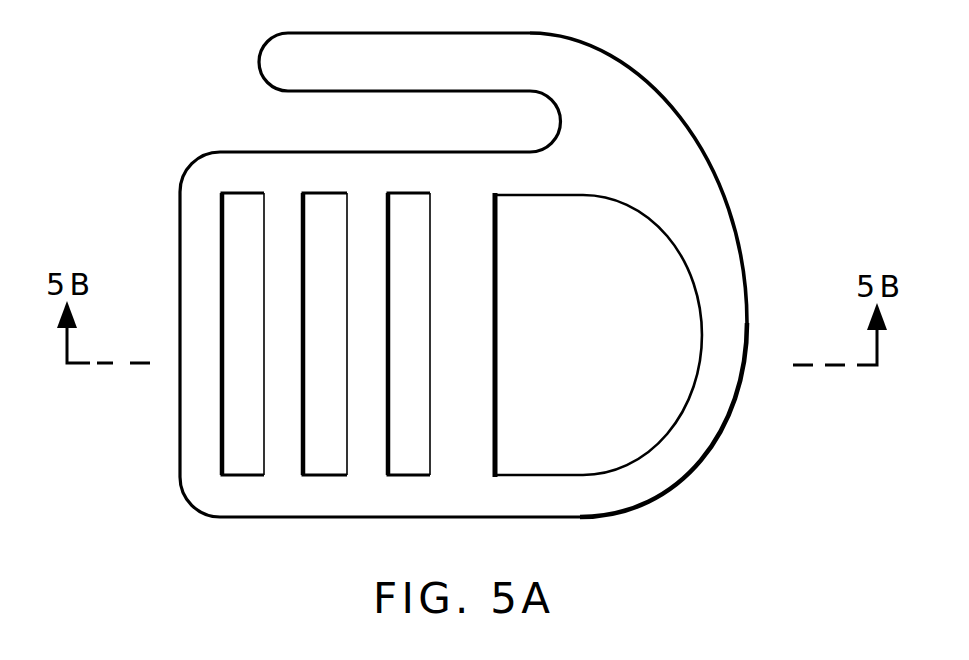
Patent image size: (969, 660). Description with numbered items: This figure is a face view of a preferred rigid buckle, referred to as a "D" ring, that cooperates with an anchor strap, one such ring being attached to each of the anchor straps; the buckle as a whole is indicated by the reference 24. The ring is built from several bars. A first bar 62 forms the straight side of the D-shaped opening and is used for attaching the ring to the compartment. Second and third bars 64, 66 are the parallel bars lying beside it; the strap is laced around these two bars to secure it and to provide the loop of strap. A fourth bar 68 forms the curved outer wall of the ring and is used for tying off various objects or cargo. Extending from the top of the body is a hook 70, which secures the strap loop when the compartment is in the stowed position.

The attachment member 24 is at (740, 84).
The first bar 62 is at (478, 332).
The second bar 64 is at (390, 418).
The third bar 66 is at (260, 433).
The fourth bar 68 is at (718, 430).
The hook 70 is at (263, 50).